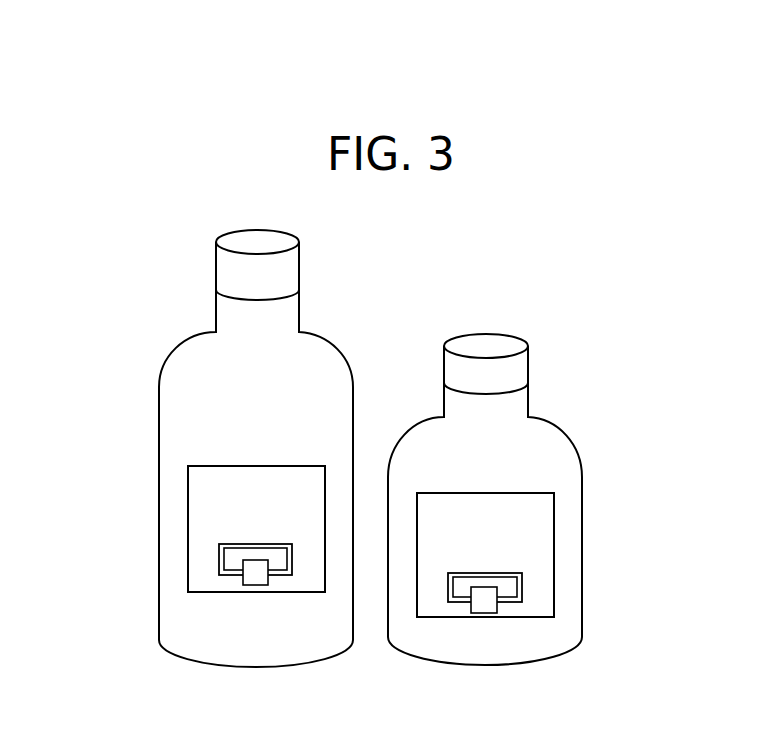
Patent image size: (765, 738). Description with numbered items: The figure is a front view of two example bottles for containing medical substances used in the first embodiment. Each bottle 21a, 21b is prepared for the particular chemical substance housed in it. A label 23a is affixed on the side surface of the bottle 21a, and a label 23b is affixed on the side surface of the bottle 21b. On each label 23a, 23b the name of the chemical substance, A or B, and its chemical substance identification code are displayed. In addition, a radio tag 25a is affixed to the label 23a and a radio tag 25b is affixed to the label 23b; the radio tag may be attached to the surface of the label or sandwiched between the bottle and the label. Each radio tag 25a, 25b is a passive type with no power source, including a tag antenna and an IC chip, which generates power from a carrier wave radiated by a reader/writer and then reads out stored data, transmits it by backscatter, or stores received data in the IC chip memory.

The bottle 21a is at (159, 418).
The label 23a is at (188, 507).
The radio tag 25a is at (219, 560).
The bottle 21b is at (582, 473).
The label 23b is at (554, 537).
The radio tag 25b is at (522, 582).